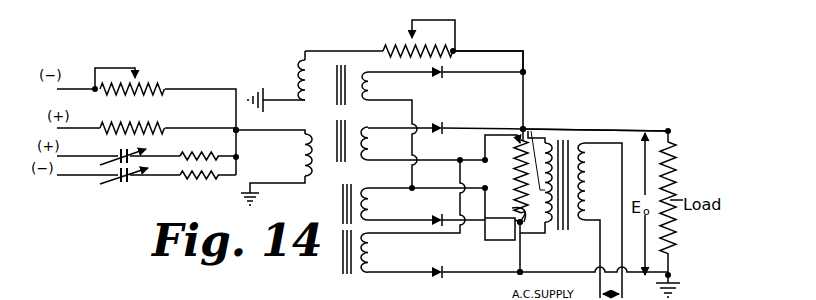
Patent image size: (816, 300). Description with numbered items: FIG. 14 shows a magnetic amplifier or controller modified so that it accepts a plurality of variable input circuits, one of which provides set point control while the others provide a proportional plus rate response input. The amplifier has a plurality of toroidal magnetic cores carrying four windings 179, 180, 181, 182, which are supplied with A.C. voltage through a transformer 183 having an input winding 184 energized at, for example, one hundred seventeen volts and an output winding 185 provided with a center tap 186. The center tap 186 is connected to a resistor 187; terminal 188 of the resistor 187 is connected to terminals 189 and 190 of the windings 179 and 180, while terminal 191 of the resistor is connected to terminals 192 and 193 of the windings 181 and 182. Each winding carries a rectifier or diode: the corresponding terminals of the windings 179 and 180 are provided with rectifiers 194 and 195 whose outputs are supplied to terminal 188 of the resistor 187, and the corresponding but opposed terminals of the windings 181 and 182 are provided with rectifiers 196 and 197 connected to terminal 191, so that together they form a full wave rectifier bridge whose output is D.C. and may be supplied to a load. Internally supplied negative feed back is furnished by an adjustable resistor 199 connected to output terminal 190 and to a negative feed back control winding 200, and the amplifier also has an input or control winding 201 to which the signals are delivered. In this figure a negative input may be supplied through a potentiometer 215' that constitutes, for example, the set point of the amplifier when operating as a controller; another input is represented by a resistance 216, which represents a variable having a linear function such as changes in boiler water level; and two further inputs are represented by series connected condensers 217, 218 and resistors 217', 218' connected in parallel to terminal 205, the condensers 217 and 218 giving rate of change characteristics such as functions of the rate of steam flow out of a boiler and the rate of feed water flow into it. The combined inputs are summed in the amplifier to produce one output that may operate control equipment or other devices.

The winding 179 is at (370, 86).
The winding 180 is at (370, 142).
The winding 181 is at (370, 196).
The winding 182 is at (370, 247).
The transformer 183 is at (582, 248).
The input winding 184 is at (581, 171).
The output winding 185 is at (548, 243).
The center tap 186 is at (525, 129).
The resistor 187 is at (514, 182).
The terminal 188 is at (517, 142).
The terminal 189 is at (526, 73).
The terminal 190 is at (521, 127).
The terminal 191 is at (502, 214).
The terminal 192 is at (518, 216).
The terminal 193 is at (518, 274).
The rectifier 194 is at (443, 76).
The rectifier 195 is at (444, 122).
The rectifier 196 is at (440, 215).
The rectifier 197 is at (438, 277).
The adjustable resistor 199 is at (406, 38).
The negative feed back control winding 200 is at (298, 70).
The input winding 201 is at (300, 156).
The terminal 205 is at (241, 130).
The potentiometer 215' is at (138, 77).
The resistance 216 is at (148, 126).
The condenser 217 is at (105, 151).
The resistor 217' is at (199, 147).
The condenser 218 is at (139, 184).
The resistor 218' is at (203, 190).